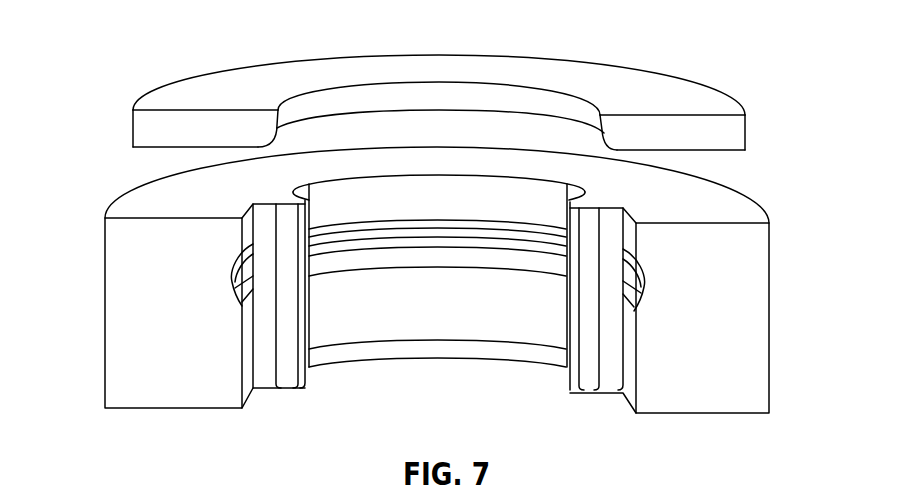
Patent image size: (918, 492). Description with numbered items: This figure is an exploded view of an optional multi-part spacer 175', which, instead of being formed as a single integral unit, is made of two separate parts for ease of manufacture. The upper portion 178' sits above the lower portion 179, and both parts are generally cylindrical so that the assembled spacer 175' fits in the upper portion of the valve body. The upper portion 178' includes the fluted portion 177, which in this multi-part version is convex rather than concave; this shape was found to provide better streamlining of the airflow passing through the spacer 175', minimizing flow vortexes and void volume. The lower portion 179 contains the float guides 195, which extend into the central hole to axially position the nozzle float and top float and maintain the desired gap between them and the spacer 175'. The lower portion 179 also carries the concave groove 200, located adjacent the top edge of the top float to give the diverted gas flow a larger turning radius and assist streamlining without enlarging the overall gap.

The multi-part spacer 175' is at (447, 88).
The fluted portion 177 is at (606, 136).
The upper portion 178' is at (479, 102).
The lower portion 179 is at (443, 262).
The float guides 195 is at (572, 190).
The concave groove 200 is at (234, 279).